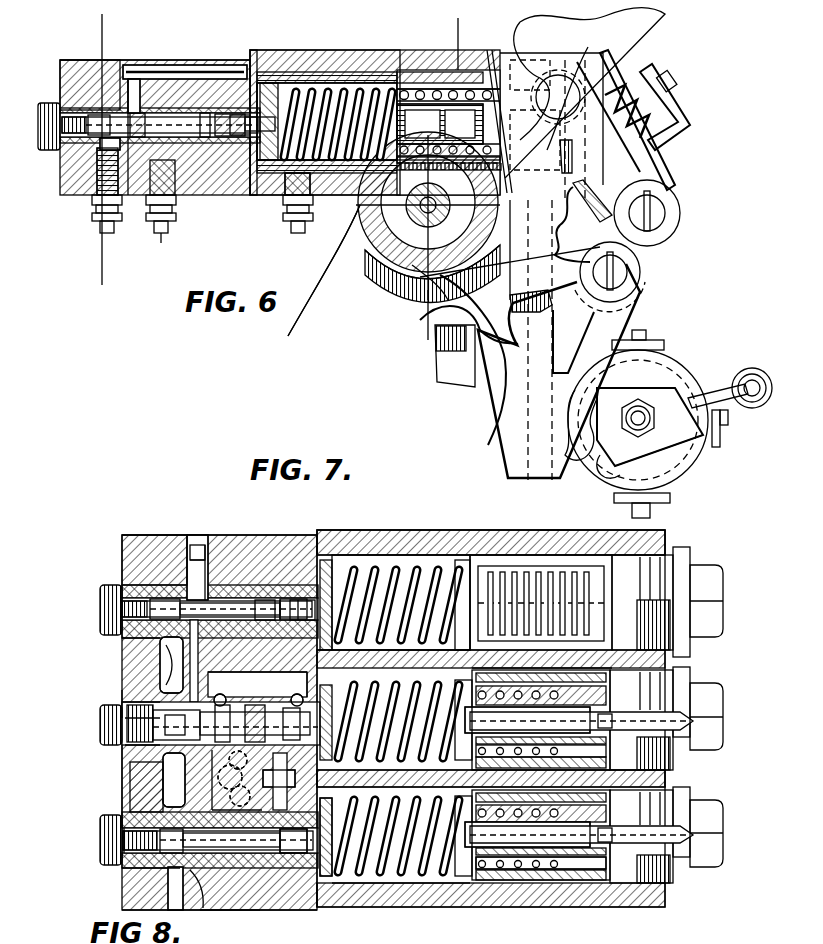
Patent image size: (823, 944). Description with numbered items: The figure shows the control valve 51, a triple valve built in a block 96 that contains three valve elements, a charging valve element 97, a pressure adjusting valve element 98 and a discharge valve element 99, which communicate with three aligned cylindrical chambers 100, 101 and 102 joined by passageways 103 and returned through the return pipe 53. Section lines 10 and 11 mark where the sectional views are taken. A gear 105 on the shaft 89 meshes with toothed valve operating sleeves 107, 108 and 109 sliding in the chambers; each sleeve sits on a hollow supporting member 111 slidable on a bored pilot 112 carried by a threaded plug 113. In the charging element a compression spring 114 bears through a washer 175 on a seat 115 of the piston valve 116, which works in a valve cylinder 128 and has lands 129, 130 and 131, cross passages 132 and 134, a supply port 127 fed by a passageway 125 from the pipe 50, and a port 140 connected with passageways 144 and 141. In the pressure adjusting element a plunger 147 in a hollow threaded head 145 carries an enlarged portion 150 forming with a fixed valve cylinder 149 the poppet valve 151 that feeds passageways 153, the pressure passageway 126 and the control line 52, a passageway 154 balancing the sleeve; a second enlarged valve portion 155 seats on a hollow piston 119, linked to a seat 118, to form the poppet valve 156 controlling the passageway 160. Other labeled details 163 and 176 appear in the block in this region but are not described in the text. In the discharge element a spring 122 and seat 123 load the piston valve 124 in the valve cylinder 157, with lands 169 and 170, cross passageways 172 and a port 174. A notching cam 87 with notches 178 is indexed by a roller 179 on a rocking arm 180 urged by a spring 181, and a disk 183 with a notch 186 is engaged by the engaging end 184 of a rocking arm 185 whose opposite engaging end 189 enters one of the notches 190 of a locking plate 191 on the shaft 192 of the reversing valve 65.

In FIG. 6, the section line 10- 10 is at (95, 38).
In FIG. 6, the section line 11- 11 is at (445, 25).
In FIG. 6, the pipe 50 is at (100, 235).
In FIG. 6, the control valve 51 is at (57, 76).
In FIG. 7, the control valve 51 is at (366, 527).
In FIG. 6, the control line 52 is at (162, 240).
In FIG. 6, the return pipe 53 is at (305, 242).
In FIG. 6, the 4-way reversing valve 65 is at (694, 381).
In FIG. 6, the notching cam 87 is at (432, 347).
In FIG. 6, the shaft 89 is at (372, 262).
In FIG. 6, the block 96 is at (246, 195).
In FIG. 7, the block 96 is at (150, 540).
In FIG. 6, the charging valve element 97 is at (45, 160).
In FIG. 7, the charging valve element 97 is at (94, 618).
In FIG. 7, the pressure adjusting valve element 98 is at (94, 735).
In FIG. 7, the discharge valve element 99 is at (94, 845).
In FIG. 6, the cylindrical chamber 100 is at (353, 176).
In FIG. 7, the cylindrical chamber 100 is at (405, 545).
In FIG. 7, the cylindrical chamber 101 is at (378, 668).
In FIG. 7, the cylindrical chamber 102 is at (398, 868).
In FIG. 7, the passageway 103 is at (340, 775).
In FIG. 6, the gear 105 is at (390, 262).
In FIG. 7, the valve operating sleeve 107 is at (493, 562).
In FIG. 7, the valve operating sleeve 108 is at (492, 668).
In FIG. 7, the valve operating sleeve 109 is at (530, 873).
In FIG. 6, the hollow supporting member 111 is at (470, 72).
In FIG. 7, the hollow supporting member 111 is at (465, 568).
In FIG. 6, the pilot 112 is at (420, 62).
In FIG. 7, the pilot 112 is at (535, 720).
In FIG. 6, the threaded plug 113 is at (642, 70).
In FIG. 7, the threaded plug 113 is at (698, 566).
In FIG. 6, the compression spring 114 is at (337, 95).
In FIG. 7, the compression spring 114 is at (437, 566).
In FIG. 6, the seat 115 is at (277, 95).
In FIG. 7, the seat 115 is at (316, 598).
In FIG. 7, the piston valve 116 is at (242, 590).
In FIG. 7, the seat 118 is at (296, 692).
In FIG. 7, the hollow piston 119 is at (244, 798).
In FIG. 7, the compression spring 122 is at (430, 868).
In FIG. 7, the seat 123 is at (314, 887).
In FIG. 7, the piston valve 124 is at (236, 895).
In FIG. 6, the passageway 125 is at (92, 202).
In FIG. 7, the passageway 125 is at (128, 684).
In FIG. 7, the pressure passageway 126 is at (250, 672).
In FIG. 6, the port 127 is at (70, 168).
In FIG. 7, the port 127 is at (122, 644).
In FIG. 6, the valve cylinder 128 is at (103, 64).
In FIG. 7, the valve cylinder 128 is at (125, 575).
In FIG. 6, the land 129 is at (134, 82).
In FIG. 7, the land 129 is at (174, 590).
In FIG. 6, the land 130 is at (256, 100).
In FIG. 7, the land 130 is at (280, 596).
In FIG. 6, the land 131 is at (270, 90).
In FIG. 7, the land 131 is at (298, 598).
In FIG. 6, the cross passages 132 is at (128, 198).
In FIG. 7, the cross passages 132 is at (205, 545).
In FIG. 6, the cross passages 134 is at (263, 196).
In FIG. 7, the cross passages 134 is at (291, 596).
In FIG. 6, the port 140 is at (181, 67).
In FIG. 7, the port 140 is at (160, 660).
In FIG. 6, the passageway 141 is at (212, 67).
In FIG. 7, the passageway 141 is at (213, 540).
In FIG. 7, the passageway 144 is at (105, 695).
In FIG. 7, the hollow threaded head 145 is at (128, 748).
In FIG. 7, the plunger 147 is at (250, 766).
In FIG. 7, the fixed valve cylinder 149 is at (130, 782).
In FIG. 7, the enlarged portion 150 is at (125, 766).
In FIG. 7, the poppet valve 151 is at (120, 708).
In FIG. 7, the passageways 153 is at (222, 790).
In FIG. 7, the passageway 154 is at (285, 672).
In FIG. 7, the enlarged valve portion 155 is at (268, 688).
In FIG. 7, the poppet valve 156 is at (250, 756).
In FIG. 7, the valve cylinder 157 is at (125, 866).
In FIG. 7, the passageway 160 is at (238, 806).
In FIG. 7, the partition 163 is at (348, 663).
In FIG. 7, the land 169 is at (125, 897).
In FIG. 7, the land 170 is at (298, 870).
In FIG. 7, the cross passageways 172 is at (185, 905).
In FIG. 7, the port 174 is at (162, 807).
In FIG. 6, the washer 175 is at (283, 197).
In FIG. 7, the washer 175 is at (350, 537).
In FIG. 7, the passage 176 is at (296, 768).
In FIG. 6, the notches 178 is at (470, 350).
In FIG. 6, the roller 179 is at (652, 26).
In FIG. 6, the rocking arm 180 is at (656, 182).
In FIG. 6, the spring 181 is at (674, 118).
In FIG. 6, the disk 183 is at (418, 268).
In FIG. 6, the engaging end 184 is at (432, 330).
In FIG. 6, the rocking arm 185 is at (522, 395).
In FIG. 6, the notch 186 is at (432, 285).
In FIG. 7, the engaging end 189 is at (556, 490).
In FIG. 6, the notches 190 is at (614, 385).
In FIG. 6, the locking plate 191 is at (658, 393).
In FIG. 6, the shaft 192 is at (678, 447).